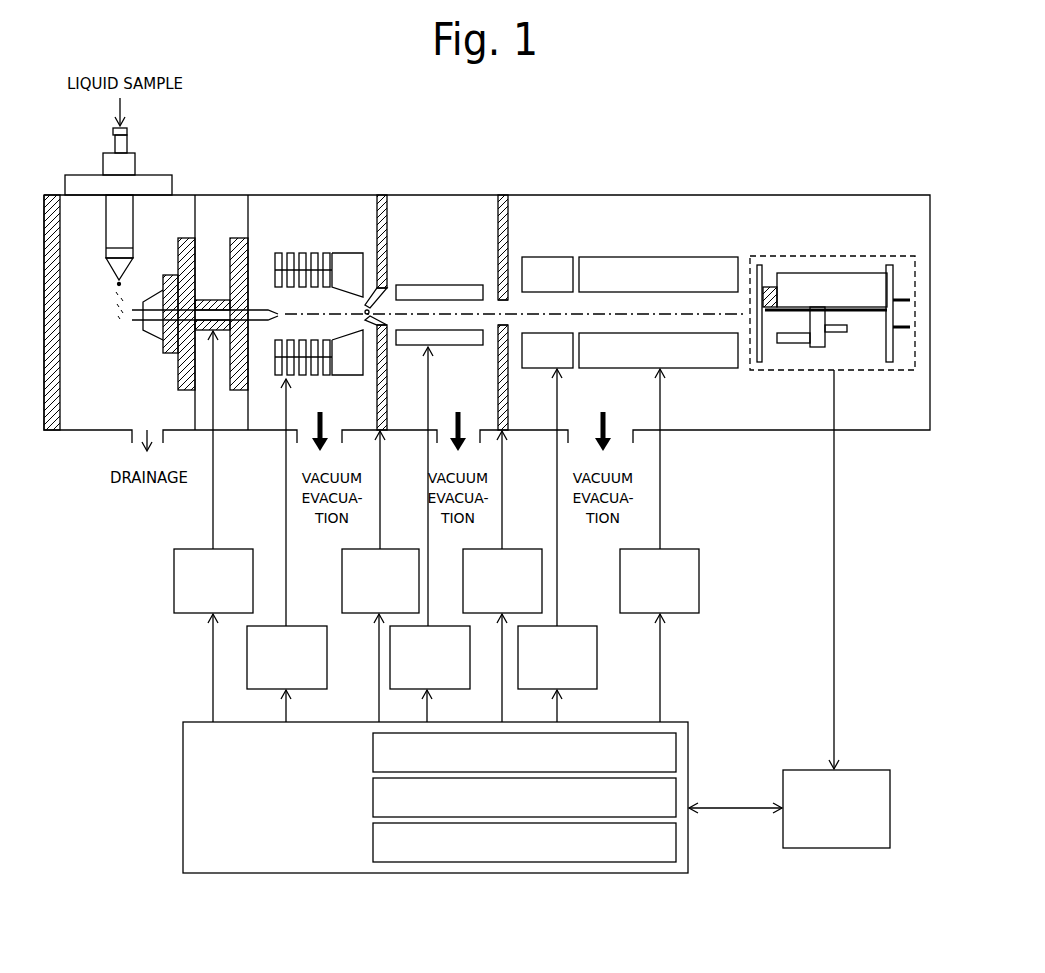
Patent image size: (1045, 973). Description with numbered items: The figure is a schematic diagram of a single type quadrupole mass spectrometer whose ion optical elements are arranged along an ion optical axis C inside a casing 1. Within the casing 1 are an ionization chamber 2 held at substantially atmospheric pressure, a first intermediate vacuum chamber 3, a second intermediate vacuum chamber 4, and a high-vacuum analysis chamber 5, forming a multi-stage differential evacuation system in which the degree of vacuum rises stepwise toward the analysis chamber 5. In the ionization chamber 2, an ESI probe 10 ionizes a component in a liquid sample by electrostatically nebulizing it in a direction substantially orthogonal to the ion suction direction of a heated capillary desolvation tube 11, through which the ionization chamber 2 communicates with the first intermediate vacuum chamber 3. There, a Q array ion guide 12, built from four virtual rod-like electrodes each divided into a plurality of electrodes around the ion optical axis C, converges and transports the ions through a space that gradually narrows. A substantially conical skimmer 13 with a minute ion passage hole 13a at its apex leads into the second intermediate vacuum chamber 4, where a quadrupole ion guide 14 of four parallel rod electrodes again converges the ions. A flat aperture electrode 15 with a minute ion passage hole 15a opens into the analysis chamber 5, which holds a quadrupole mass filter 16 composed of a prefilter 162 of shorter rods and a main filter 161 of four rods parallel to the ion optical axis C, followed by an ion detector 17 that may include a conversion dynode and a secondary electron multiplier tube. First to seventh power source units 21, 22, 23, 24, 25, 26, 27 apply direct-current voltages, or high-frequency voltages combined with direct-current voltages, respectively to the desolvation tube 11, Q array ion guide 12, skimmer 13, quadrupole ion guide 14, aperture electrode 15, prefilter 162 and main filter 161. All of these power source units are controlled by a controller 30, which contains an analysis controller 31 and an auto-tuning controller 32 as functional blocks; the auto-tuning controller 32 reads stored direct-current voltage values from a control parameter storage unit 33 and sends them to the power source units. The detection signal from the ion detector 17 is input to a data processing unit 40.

The casing 1 is at (818, 195).
The ionization chamber 2 is at (83, 414).
The first intermediate vacuum chamber 3 is at (268, 414).
The second intermediate vacuum chamber 4 is at (411, 414).
The analysis chamber 5 is at (762, 414).
The ESI probe 10 is at (114, 223).
The desolvation tube 11 is at (162, 302).
The Q array ion guide 12 is at (295, 249).
The skimmer 13 is at (382, 226).
The ion passage hole 13a is at (368, 304).
The quadrupole ion guide 14 is at (428, 282).
The aperture electrode 15 is at (511, 233).
The ion passage hole 15a is at (499, 235).
The quadrupole mass filter 16 is at (630, 249).
The main filter 161 is at (630, 255).
The prefilter 162 is at (552, 255).
The ion detector 17 is at (845, 270).
The ion optical axis C is at (690, 313).
The first power source unit 21 is at (232, 548).
The second power source unit 22 is at (304, 625).
The third power source unit 23 is at (399, 548).
The fourth power source unit 24 is at (441, 625).
The fifth power source unit 25 is at (521, 548).
The sixth power source unit 26 is at (576, 625).
The seventh power source unit 27 is at (679, 548).
The controller 30 is at (454, 820).
The analysis controller 31 is at (677, 748).
The auto-tuning controller 32 is at (677, 792).
The control parameter storage unit 33 is at (677, 840).
The data processing unit 40 is at (866, 770).